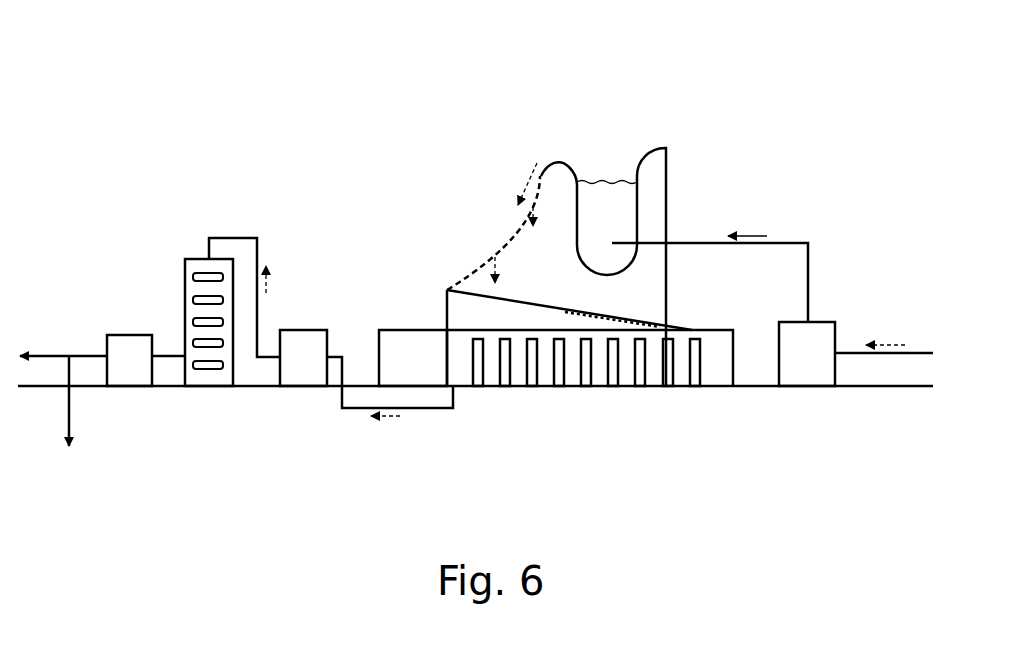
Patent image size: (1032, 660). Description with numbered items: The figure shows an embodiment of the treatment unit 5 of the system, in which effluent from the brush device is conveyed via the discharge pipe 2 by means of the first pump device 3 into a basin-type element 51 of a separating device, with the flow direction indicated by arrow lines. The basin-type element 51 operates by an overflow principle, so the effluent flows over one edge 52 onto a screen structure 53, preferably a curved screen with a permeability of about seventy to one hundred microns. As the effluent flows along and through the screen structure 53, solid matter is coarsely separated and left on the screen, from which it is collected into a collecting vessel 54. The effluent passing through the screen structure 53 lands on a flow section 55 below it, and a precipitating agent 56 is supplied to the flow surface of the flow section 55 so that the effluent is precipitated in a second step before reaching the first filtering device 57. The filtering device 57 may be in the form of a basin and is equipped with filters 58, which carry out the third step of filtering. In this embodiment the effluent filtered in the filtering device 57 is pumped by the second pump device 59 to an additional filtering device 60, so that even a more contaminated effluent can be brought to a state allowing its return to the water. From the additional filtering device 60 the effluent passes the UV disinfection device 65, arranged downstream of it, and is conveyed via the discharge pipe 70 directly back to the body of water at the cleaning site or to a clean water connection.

The discharge pipe 2 is at (925, 348).
The first pump device 3 is at (828, 330).
The treatment unit 5 is at (362, 140).
The basin-type element 51 is at (605, 202).
The edge 52 is at (558, 160).
The screen structure 53 is at (468, 274).
The collecting vessel 54 is at (398, 340).
The flow section 55 is at (537, 300).
The precipitating agent 56 is at (650, 312).
The first filtering device 57 is at (466, 376).
The filters 58 is at (560, 387).
The second pump device 59 is at (303, 338).
The additional filtering device 60 is at (195, 266).
The UV disinfection device 65 is at (143, 340).
The discharge pipe 70 is at (79, 350).